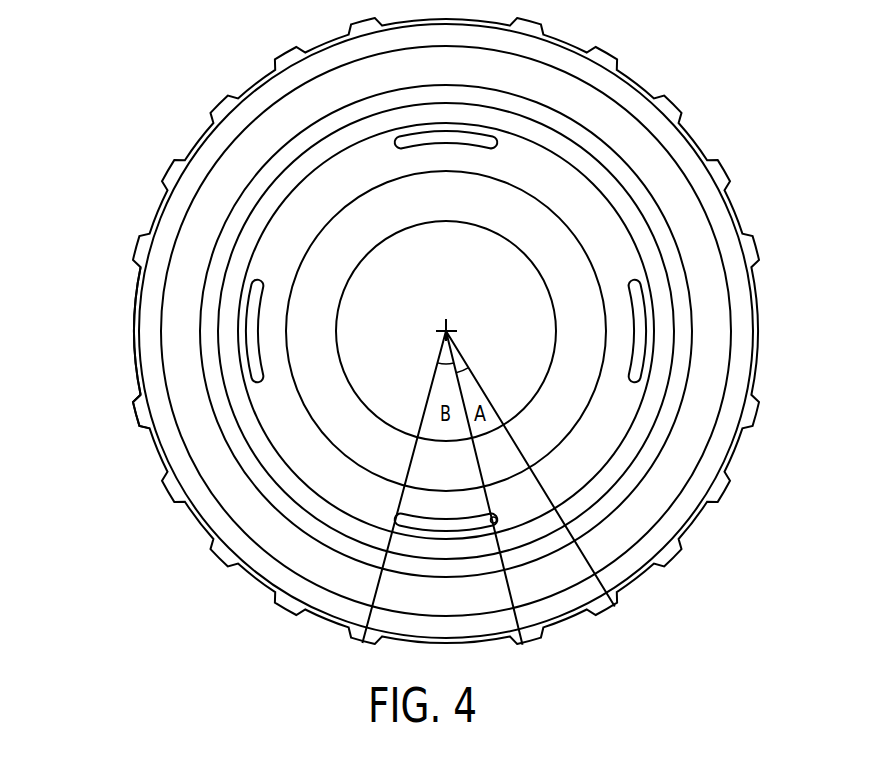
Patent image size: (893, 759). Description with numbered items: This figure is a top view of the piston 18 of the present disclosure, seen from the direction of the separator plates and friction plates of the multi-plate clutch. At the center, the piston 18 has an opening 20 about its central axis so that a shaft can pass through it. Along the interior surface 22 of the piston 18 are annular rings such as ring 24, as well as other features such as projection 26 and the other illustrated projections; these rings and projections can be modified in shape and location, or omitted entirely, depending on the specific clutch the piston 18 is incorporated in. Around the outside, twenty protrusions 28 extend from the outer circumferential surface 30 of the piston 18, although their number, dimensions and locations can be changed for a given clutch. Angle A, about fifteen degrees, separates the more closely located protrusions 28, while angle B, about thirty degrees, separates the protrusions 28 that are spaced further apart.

The piston 18 is at (95, 108).
The opening 20 is at (445, 237).
The interior surface 22 is at (673, 192).
The ring 24 is at (695, 338).
The projection 26 is at (640, 303).
The protrusion 28 is at (128, 418).
The outer circumferential surface 30 is at (132, 348).